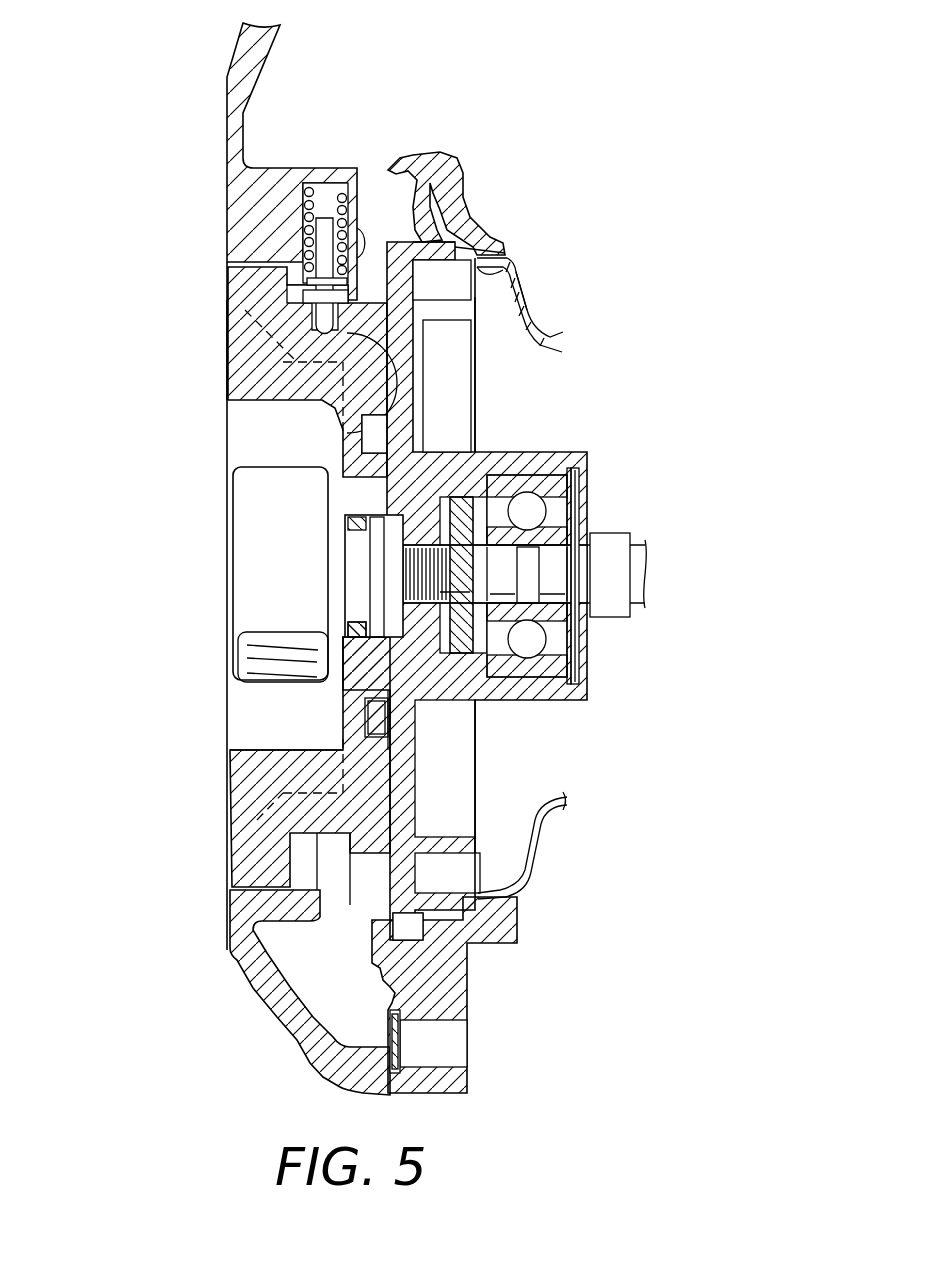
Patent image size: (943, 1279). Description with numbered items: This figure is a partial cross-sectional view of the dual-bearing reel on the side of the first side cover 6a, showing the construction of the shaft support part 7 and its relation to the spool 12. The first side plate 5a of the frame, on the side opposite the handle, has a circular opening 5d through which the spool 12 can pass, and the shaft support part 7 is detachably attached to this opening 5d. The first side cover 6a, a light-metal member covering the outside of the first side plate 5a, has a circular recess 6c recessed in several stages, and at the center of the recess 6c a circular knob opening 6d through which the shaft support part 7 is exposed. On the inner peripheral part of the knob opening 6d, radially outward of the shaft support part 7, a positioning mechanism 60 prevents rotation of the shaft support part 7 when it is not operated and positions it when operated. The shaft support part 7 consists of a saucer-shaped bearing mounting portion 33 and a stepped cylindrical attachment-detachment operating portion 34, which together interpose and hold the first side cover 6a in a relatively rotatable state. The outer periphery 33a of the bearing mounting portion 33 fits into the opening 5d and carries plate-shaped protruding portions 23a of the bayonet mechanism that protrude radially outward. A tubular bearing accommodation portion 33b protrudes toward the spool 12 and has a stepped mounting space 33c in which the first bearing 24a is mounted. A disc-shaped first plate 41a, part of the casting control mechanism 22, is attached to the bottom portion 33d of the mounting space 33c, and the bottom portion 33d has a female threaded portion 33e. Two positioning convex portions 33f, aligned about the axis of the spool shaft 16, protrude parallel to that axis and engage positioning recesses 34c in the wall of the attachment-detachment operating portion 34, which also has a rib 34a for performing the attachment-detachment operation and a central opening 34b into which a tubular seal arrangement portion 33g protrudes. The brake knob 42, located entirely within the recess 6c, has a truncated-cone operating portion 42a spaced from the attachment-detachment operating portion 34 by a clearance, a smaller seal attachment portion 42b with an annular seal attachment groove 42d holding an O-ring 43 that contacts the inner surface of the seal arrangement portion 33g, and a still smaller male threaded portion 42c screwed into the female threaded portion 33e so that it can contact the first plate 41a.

The first side plate 5a is at (498, 213).
The circular opening 5d is at (512, 270).
The first side cover 6a is at (212, 52).
The circular recess 6c is at (272, 845).
The knob opening 6d is at (372, 806).
The shaft support part 7 is at (450, 167).
The spool 12 is at (513, 305).
The spool shaft 16 is at (626, 524).
The casting control mechanism 22 is at (214, 545).
The protruding portions 23a is at (378, 935).
The first bearing 24a is at (537, 483).
The bearing mounting portion 33 is at (370, 888).
The outer periphery 33a is at (428, 224).
The bearing accommodation portion 33b is at (510, 440).
The mounting space 33c is at (573, 647).
The bottom portion 33d is at (545, 505).
The female threaded portion 33e is at (450, 680).
The positioning convex portions 33f is at (370, 423).
The seal arrangement portion 33g is at (392, 510).
The attachment-detachment operating portion 34 is at (328, 437).
The rib 34a is at (228, 365).
The opening 34b is at (392, 643).
The positioning recesses 34c is at (333, 330).
The first plate 41a is at (473, 593).
The brake knob 42 is at (224, 598).
The operating portion 42a is at (262, 568).
The seal attachment portion 42b is at (420, 600).
The male threaded portion 42c is at (473, 697).
The seal attachment groove 42d is at (388, 588).
The O-ring 43 is at (470, 930).
The positioning mechanism 60 is at (290, 243).